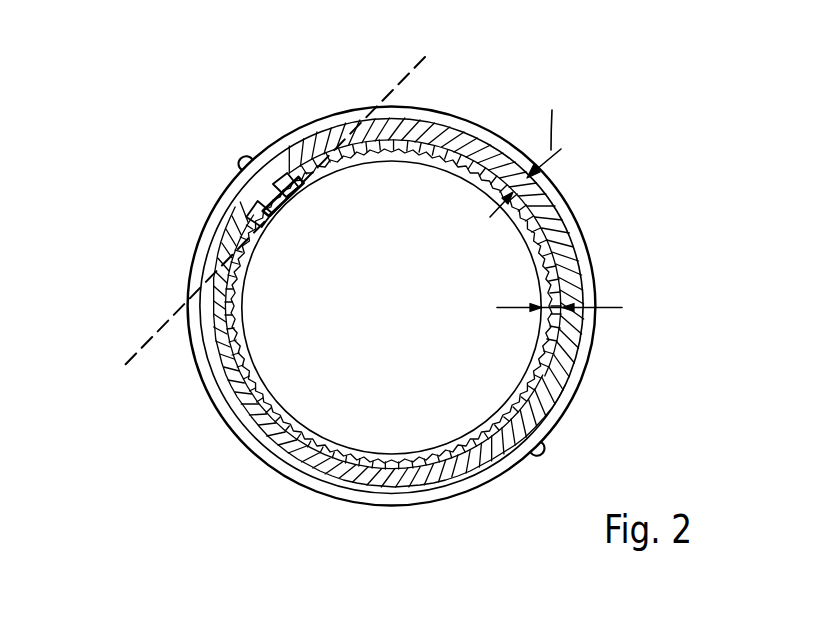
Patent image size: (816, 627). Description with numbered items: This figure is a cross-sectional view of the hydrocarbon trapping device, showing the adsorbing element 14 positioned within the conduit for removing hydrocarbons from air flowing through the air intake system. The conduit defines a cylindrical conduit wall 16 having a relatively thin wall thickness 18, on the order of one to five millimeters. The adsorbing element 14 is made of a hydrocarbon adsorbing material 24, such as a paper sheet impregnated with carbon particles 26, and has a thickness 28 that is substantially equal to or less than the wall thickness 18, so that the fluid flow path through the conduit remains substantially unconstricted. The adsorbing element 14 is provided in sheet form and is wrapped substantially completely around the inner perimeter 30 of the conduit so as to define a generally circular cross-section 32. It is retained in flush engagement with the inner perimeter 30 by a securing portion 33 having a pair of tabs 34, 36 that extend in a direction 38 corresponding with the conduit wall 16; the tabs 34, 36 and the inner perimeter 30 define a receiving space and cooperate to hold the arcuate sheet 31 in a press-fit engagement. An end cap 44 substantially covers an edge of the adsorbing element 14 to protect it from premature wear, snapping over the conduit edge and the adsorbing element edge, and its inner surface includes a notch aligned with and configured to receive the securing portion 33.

The adsorbing element 14 is at (558, 335).
The conduit wall 16 is at (443, 125).
The wall thickness 18 is at (528, 149).
The hydrocarbon adsorbing material 24 is at (553, 258).
The carbon particles 26 is at (546, 210).
The thickness 28 is at (612, 308).
The inner perimeter 30 is at (529, 379).
The arcuate sheet 31 is at (543, 351).
The circular cross-section 32 is at (454, 425).
The securing portion 33 is at (299, 214).
The tab 34 is at (274, 218).
The tab 36 is at (291, 190).
The direction 38 is at (407, 80).
The end cap 44 is at (228, 432).